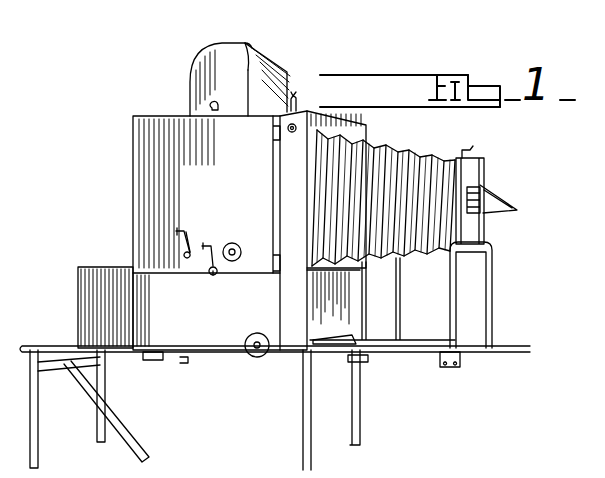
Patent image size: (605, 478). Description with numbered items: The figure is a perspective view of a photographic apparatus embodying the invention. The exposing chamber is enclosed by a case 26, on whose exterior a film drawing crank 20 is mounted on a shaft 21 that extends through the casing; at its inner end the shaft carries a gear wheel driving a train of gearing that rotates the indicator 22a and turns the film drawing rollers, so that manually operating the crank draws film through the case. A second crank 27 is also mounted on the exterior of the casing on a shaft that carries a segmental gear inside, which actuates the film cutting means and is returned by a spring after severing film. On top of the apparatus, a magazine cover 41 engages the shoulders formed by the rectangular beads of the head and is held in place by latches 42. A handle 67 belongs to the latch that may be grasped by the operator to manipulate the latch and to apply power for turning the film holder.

The magazine cover 41 is at (257, 54).
The latches 42 is at (210, 106).
The case 26 is at (253, 130).
The handle 67 is at (300, 104).
The crank 27 is at (185, 235).
The film drawing crank 20 is at (208, 268).
The shaft 21 is at (214, 271).
The indicator 22a is at (236, 244).